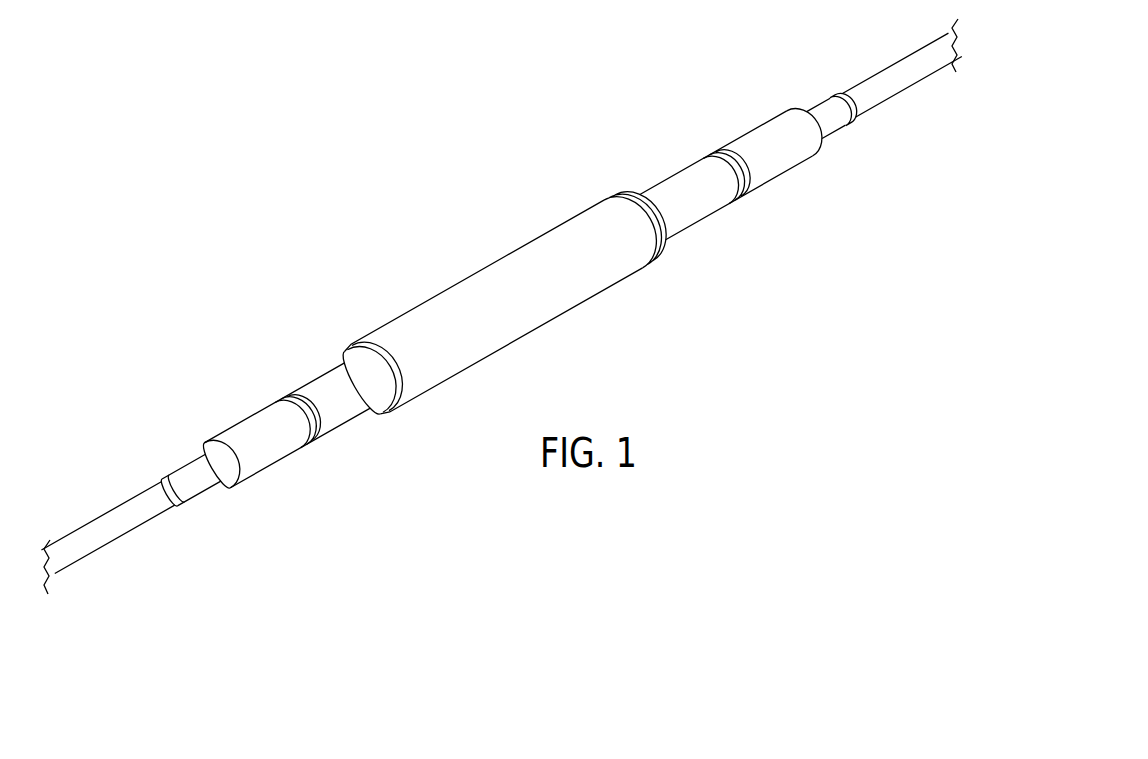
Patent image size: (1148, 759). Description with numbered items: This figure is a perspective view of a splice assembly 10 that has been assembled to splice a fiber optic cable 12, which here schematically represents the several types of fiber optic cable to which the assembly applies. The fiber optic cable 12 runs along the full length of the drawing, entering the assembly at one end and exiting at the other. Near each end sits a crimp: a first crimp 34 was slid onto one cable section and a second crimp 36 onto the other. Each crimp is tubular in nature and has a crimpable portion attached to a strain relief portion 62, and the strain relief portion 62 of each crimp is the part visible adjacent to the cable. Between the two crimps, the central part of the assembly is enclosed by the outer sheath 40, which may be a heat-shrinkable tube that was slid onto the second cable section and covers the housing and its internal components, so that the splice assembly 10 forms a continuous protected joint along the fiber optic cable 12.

The splice assembly 10 is at (388, 223).
The fiber optic cable 12 is at (125, 521).
The first crimp 34 is at (190, 490).
The second crimp 36 is at (817, 130).
The outer sheath 40 is at (578, 222).
The strain relief portion 62 is at (193, 473).